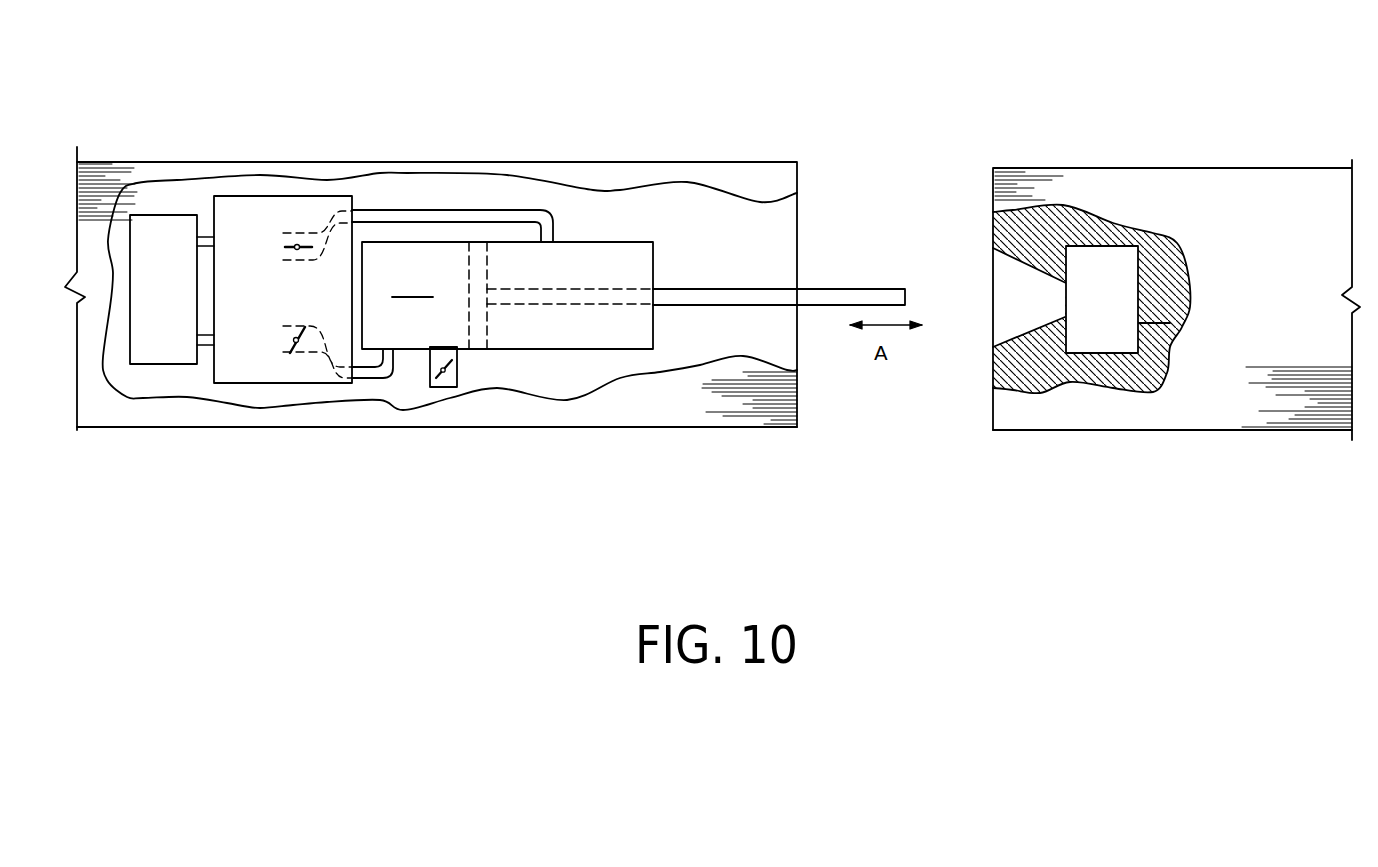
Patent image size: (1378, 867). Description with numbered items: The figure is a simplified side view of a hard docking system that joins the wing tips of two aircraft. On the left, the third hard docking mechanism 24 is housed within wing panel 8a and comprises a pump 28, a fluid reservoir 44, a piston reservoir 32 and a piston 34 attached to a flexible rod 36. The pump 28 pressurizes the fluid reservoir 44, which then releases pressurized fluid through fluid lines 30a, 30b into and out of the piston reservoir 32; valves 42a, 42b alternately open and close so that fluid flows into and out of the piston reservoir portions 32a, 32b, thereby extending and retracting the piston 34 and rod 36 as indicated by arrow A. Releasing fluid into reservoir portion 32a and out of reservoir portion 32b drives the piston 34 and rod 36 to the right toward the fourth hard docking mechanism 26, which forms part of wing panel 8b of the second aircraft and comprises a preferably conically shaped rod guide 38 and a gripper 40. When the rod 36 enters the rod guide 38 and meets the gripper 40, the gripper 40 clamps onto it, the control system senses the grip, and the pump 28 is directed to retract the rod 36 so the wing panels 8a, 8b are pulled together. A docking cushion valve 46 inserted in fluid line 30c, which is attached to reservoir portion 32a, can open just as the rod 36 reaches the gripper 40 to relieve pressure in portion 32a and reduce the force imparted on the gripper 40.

The third hard docking mechanism 24 is at (457, 190).
The fourth hard docking mechanism 26 is at (1075, 178).
The pump 28 is at (148, 364).
The fluid line 30a is at (362, 380).
The fluid line 30b is at (523, 212).
The fluid line 30c is at (417, 373).
The piston reservoir 32 is at (607, 349).
The piston reservoir portion 32a is at (413, 281).
The piston reservoir portion 32b is at (630, 255).
The piston 34 is at (487, 332).
The flexible rod 36 is at (755, 288).
The rod guide 38 is at (1025, 343).
The gripper 40 is at (1180, 325).
The valve 42a is at (282, 240).
The valve 42b is at (285, 340).
The fluid reservoir 44 is at (283, 383).
The docking cushion valve 46 is at (447, 387).
The wing panel 8a is at (707, 427).
The wing panel 8b is at (1123, 432).